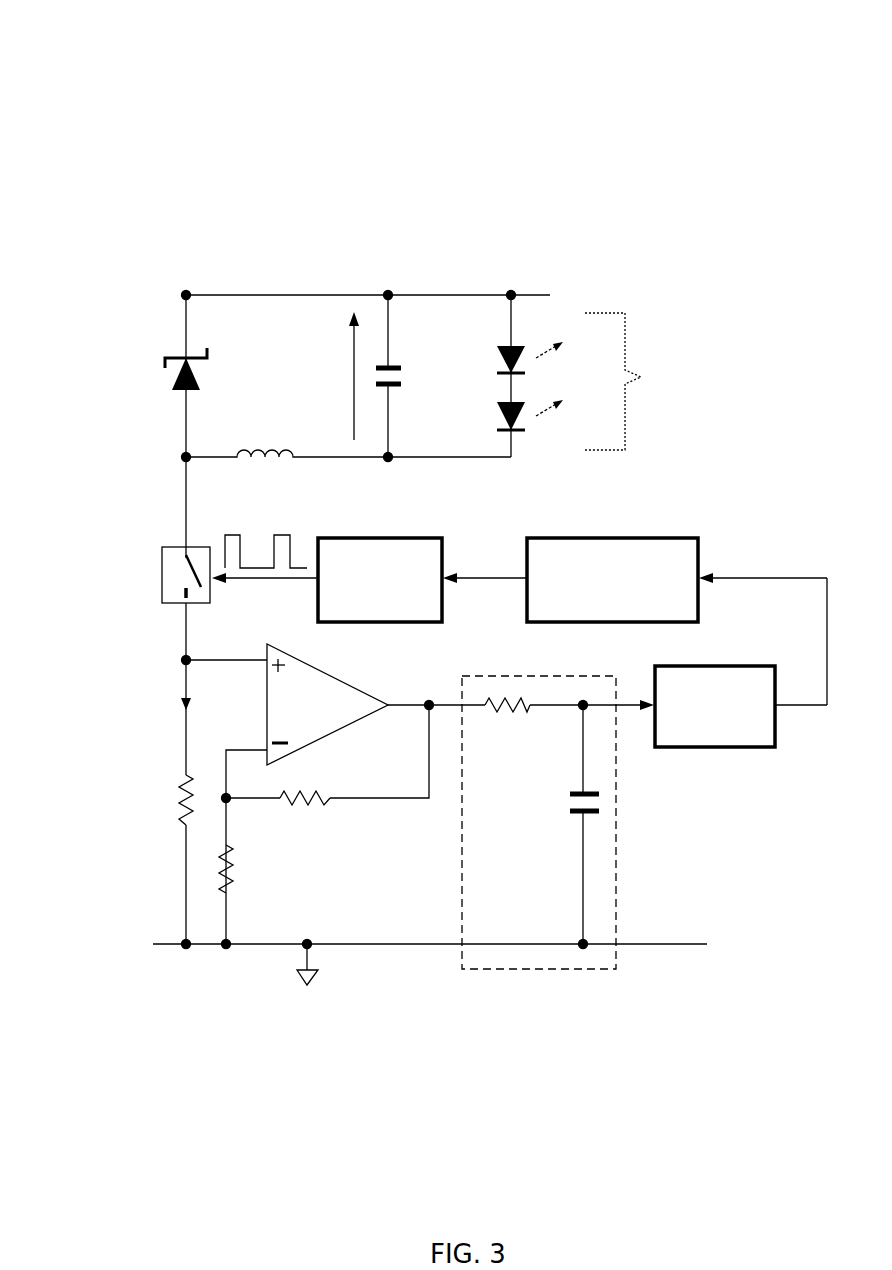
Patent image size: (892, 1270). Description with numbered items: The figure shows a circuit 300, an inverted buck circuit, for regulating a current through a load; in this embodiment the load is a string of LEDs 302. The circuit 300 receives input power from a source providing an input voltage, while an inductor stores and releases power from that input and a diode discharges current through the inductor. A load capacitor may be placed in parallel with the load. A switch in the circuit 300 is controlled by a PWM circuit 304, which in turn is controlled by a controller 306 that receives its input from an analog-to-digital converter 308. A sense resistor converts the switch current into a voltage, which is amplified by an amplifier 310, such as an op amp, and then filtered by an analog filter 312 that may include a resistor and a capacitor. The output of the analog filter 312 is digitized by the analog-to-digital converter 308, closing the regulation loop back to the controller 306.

The circuit 300 is at (90, 96).
The string of LEDs 302 is at (506, 346).
The PWM circuit 304 is at (398, 538).
The controller 306 is at (640, 538).
The analog-to-digital converter 308 is at (693, 745).
The amplifier 310 is at (358, 712).
The analog filter 312 is at (610, 855).